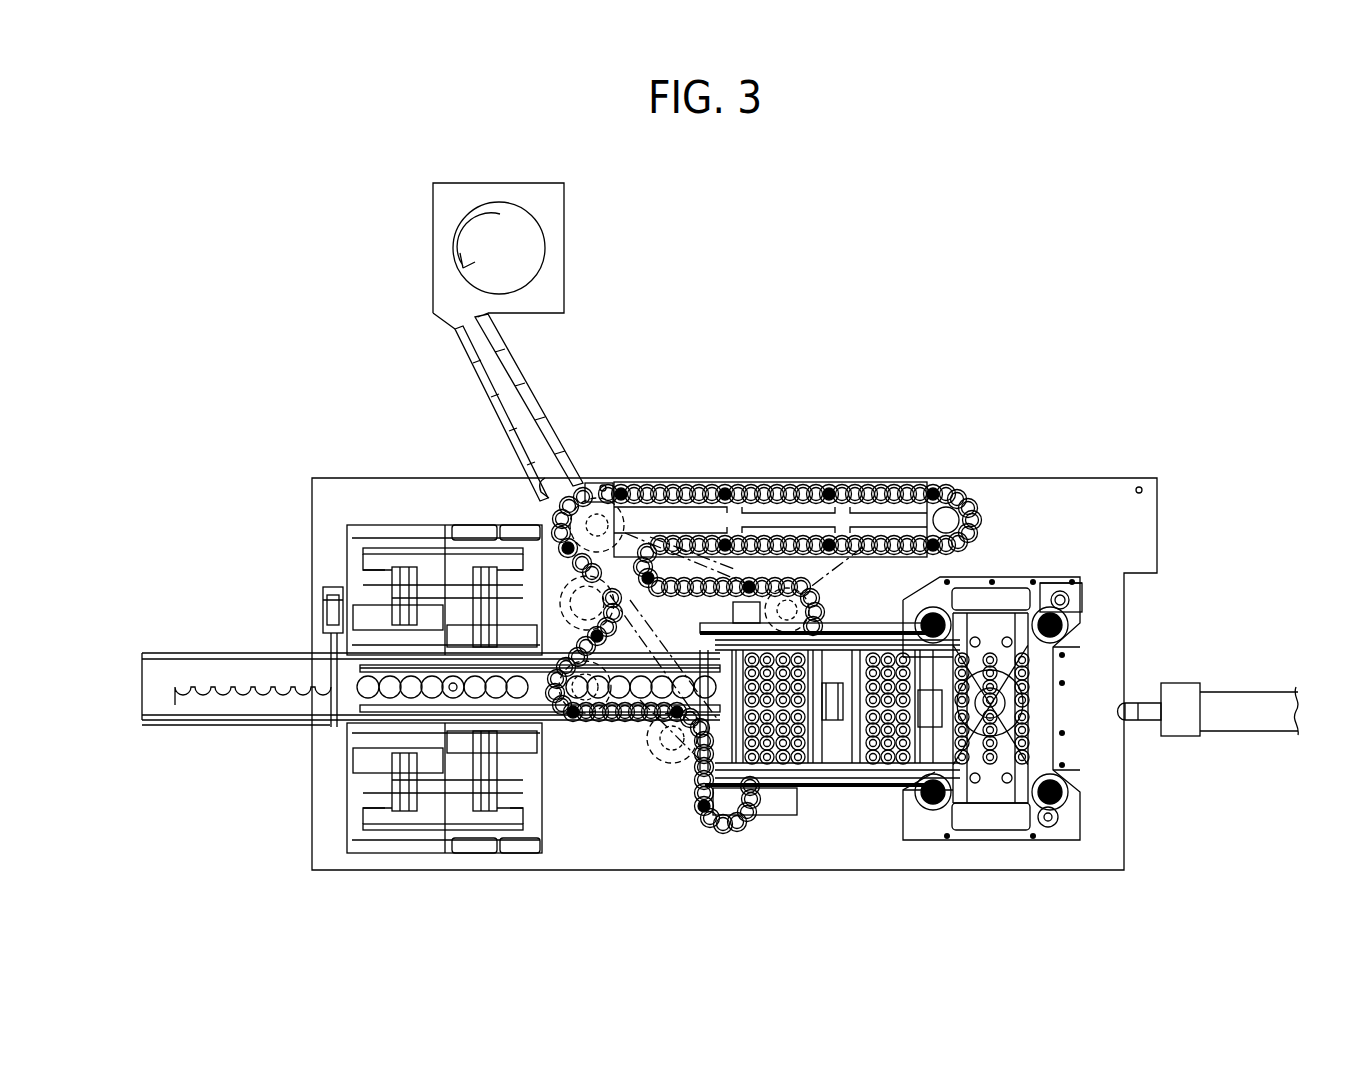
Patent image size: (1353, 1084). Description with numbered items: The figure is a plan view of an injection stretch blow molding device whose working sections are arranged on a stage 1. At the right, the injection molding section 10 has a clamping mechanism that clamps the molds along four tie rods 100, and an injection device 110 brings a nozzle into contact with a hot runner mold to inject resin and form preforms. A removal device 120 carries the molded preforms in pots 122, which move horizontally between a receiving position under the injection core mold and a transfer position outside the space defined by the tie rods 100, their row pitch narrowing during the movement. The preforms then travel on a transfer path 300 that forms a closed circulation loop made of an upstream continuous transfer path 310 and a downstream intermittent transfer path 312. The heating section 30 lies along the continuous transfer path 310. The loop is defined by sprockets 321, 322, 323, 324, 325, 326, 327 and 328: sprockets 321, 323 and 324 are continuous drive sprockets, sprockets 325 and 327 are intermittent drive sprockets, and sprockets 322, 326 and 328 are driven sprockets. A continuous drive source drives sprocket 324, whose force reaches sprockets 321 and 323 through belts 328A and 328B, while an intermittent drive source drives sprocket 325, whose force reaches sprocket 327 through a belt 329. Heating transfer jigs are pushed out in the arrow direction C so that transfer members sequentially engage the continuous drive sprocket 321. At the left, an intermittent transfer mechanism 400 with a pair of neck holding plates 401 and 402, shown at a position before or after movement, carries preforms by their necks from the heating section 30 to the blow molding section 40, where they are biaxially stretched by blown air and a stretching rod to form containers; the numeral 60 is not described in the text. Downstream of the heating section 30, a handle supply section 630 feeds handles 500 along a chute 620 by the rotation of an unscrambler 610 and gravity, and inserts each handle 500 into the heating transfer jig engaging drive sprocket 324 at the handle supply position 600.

The stage 1 is at (1050, 478).
The injection molding section 10 is at (1058, 550).
The heating section 30 is at (936, 488).
The blow molding section 40 is at (329, 576).
The conveyor frame 60 is at (224, 746).
The tie rods 100 is at (1080, 614).
The injection device 110 is at (1226, 692).
The removal device 120 is at (887, 806).
The pots 122 is at (858, 787).
The transfer path 300 is at (665, 789).
The continuous transfer path 310 is at (762, 474).
The intermittent transfer path 312 is at (655, 784).
The continuous drive sprocket 321 is at (820, 612).
The driven sprocket 322 is at (684, 538).
The continuous drive sprocket 323 is at (958, 507).
The continuous drive sprocket 324 is at (597, 498).
The intermittent drive sprocket 325 is at (620, 614).
The driven sprocket 326 is at (582, 720).
The intermittent drive sprocket 327 is at (672, 765).
The driven sprocket 328 is at (728, 826).
The belt 328A is at (735, 570).
The belt 328B is at (898, 567).
The belt 329 is at (628, 730).
The intermittent transfer mechanism 400 is at (166, 706).
The neck holding plate 401 is at (283, 703).
The neck holding plate 402 is at (345, 667).
The handle 500 is at (523, 392).
The handle supply position 600 is at (560, 475).
The unscrambler 610 is at (546, 234).
The chute 620 is at (468, 357).
The handle supply section 630 is at (580, 276).